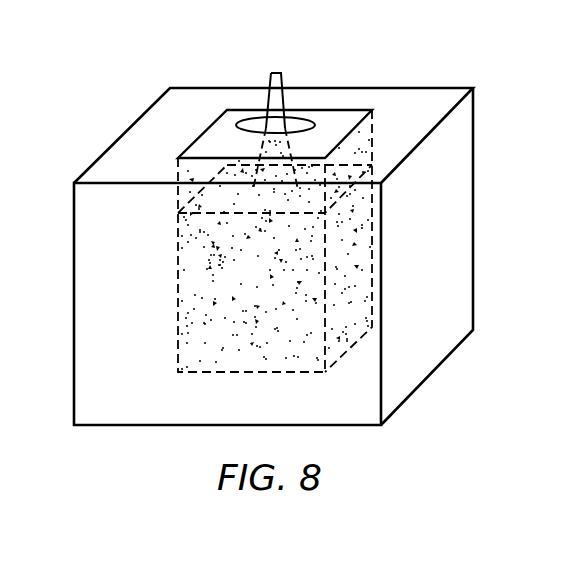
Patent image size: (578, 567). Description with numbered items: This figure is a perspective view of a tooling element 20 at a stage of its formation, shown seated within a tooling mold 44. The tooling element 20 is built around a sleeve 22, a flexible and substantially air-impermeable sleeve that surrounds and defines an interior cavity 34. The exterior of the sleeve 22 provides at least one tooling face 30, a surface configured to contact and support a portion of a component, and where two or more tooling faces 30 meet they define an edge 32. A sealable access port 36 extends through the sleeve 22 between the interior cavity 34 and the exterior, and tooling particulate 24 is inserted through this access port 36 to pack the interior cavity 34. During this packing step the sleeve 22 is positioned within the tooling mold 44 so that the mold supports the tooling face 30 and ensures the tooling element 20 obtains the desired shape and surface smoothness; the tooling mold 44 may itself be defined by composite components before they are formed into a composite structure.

The tooling element 20 is at (378, 125).
The sleeve 22 is at (334, 126).
The tooling particulate 24 is at (271, 96).
The tooling face 30 is at (217, 278).
The edge 32 is at (335, 337).
The interior cavity 34 is at (221, 146).
The access port 36 is at (300, 118).
The tooling mold 44 is at (398, 385).